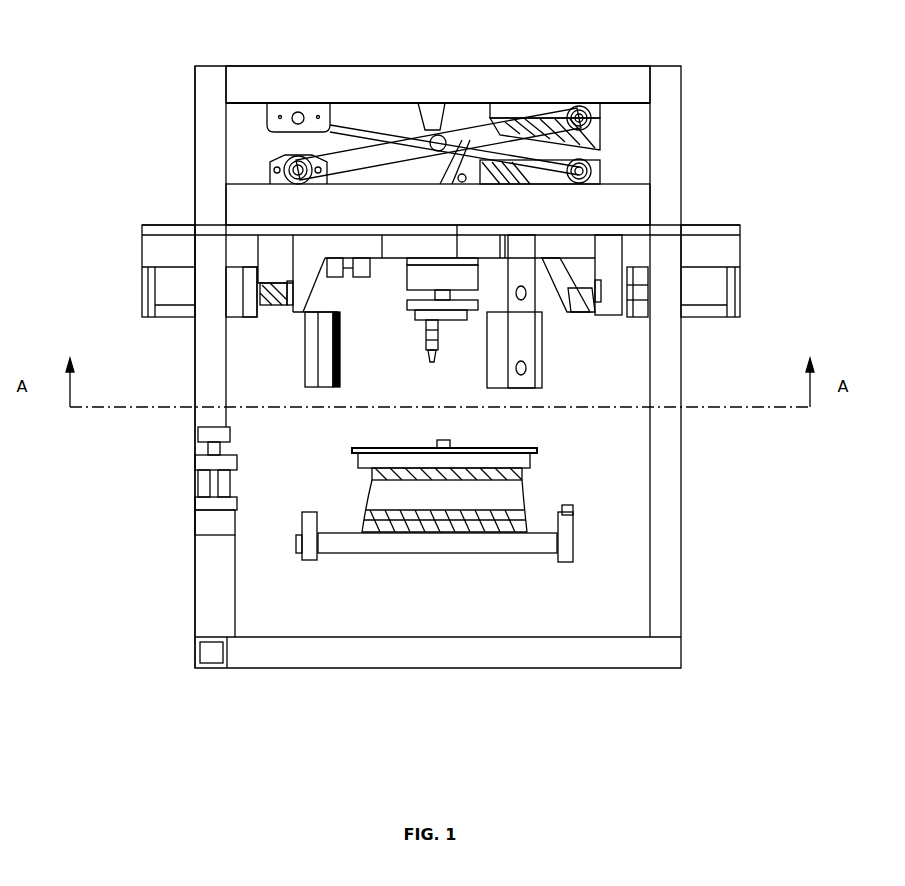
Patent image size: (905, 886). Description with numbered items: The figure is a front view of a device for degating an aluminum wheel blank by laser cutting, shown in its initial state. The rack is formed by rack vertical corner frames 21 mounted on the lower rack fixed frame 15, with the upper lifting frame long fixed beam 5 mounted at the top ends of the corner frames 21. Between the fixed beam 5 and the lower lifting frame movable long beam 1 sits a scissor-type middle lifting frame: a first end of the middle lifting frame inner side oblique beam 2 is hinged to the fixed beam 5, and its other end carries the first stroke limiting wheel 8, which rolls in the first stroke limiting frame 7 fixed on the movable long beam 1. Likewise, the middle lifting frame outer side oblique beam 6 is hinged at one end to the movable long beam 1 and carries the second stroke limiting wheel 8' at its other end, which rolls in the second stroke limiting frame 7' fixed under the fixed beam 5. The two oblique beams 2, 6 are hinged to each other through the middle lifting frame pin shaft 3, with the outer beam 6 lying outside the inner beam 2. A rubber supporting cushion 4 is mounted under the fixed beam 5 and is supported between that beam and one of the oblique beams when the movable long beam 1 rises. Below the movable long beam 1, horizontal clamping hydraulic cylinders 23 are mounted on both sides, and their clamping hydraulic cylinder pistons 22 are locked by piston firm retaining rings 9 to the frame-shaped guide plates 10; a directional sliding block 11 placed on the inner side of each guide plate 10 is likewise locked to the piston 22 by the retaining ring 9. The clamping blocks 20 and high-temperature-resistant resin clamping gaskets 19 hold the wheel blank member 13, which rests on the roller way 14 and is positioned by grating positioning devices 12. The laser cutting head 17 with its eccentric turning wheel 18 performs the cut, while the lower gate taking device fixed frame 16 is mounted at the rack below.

The lower lifting frame movable long beam 1 is at (438, 205).
The middle lifting frame inner side oblique beam 2 is at (397, 130).
The middle lifting frame pin shaft 3 is at (438, 140).
The rubber supporting cushion 4 is at (427, 112).
The upper lifting frame long fixed beam 5 is at (452, 85).
The middle lifting frame outer side oblique beam 6 is at (463, 140).
The first stroke limiting frame 7 is at (545, 82).
The second stroke limiting frame 7' is at (545, 66).
The second stroke limiting wheel 8' is at (568, 72).
The first stroke limiting wheel 8 is at (556, 99).
The piston firm retaining ring 9 is at (597, 293).
The frame-shaped guide plate 10 is at (583, 290).
The directional sliding block 11 is at (538, 273).
The grating positioning device 12 is at (568, 518).
The wheel blank member 13 is at (480, 502).
The roller way 14 is at (437, 542).
The lower rack fixed frame 15 is at (437, 652).
The lower gate taking device fixed frame 16 is at (197, 650).
The laser cutting head 17 is at (433, 327).
The eccentric turning wheel 18 is at (435, 303).
The high-temperature-resistant resin clamping gasket 19 is at (323, 372).
The clamping block 20 is at (313, 348).
The rack vertical corner frame 21 is at (210, 387).
The clamping hydraulic cylinder piston 22 is at (273, 290).
The horizontal clamping hydraulic cylinder 23 is at (232, 292).